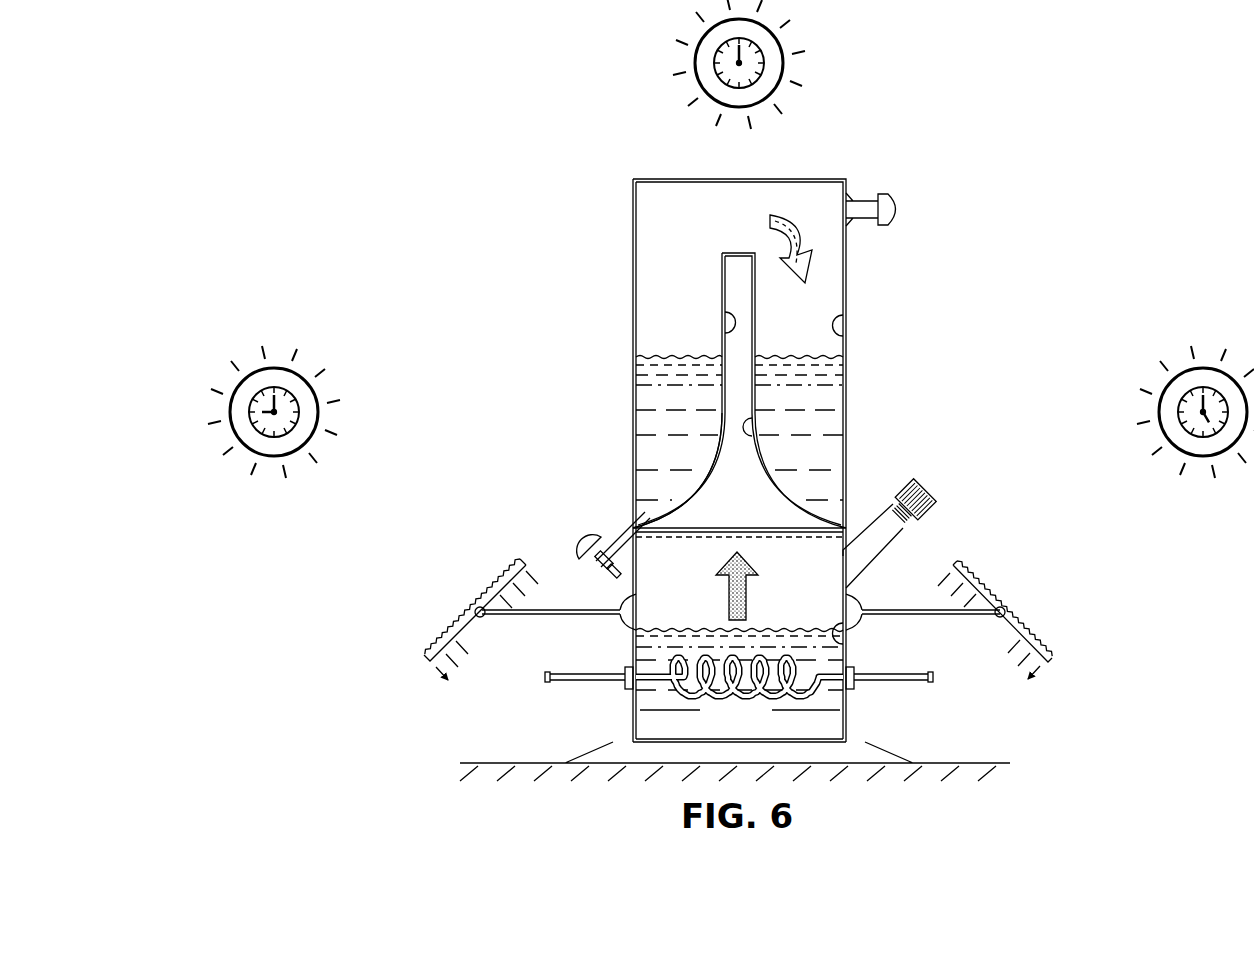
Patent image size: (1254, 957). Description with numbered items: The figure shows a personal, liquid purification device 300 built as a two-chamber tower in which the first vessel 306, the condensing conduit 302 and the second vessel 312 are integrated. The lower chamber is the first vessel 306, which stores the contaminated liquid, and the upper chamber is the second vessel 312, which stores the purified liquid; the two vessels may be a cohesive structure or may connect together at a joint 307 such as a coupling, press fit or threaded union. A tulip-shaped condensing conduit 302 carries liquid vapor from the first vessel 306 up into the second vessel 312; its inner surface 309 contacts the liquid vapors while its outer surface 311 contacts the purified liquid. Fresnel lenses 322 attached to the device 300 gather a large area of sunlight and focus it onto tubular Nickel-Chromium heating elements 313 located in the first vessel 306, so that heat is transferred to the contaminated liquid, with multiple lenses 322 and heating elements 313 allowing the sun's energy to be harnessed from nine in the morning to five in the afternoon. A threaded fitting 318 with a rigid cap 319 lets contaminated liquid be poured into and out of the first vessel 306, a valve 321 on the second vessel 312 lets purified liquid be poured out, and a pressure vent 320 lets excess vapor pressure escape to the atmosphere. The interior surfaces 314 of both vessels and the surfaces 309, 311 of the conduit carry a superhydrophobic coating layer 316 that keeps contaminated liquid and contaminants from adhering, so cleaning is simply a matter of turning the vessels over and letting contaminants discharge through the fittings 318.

The personal liquid purification device 300 is at (477, 371).
The condensing conduit 302 is at (759, 513).
The first vessel 306 is at (828, 588).
The joint 307 is at (927, 509).
The inner surface 309 is at (752, 436).
The outer surface 311 is at (700, 478).
The second vessel 312 is at (696, 283).
The heating element 313 is at (570, 683).
The interior surfaces 314 is at (737, 481).
The superhydrophobic coating layer 316 is at (724, 311).
The threaded fitting 318 is at (927, 509).
The rigid cap 319 is at (922, 484).
The pressure vent 320 is at (868, 222).
The valve 321 is at (612, 535).
The Fresnel lens 322 is at (463, 606).